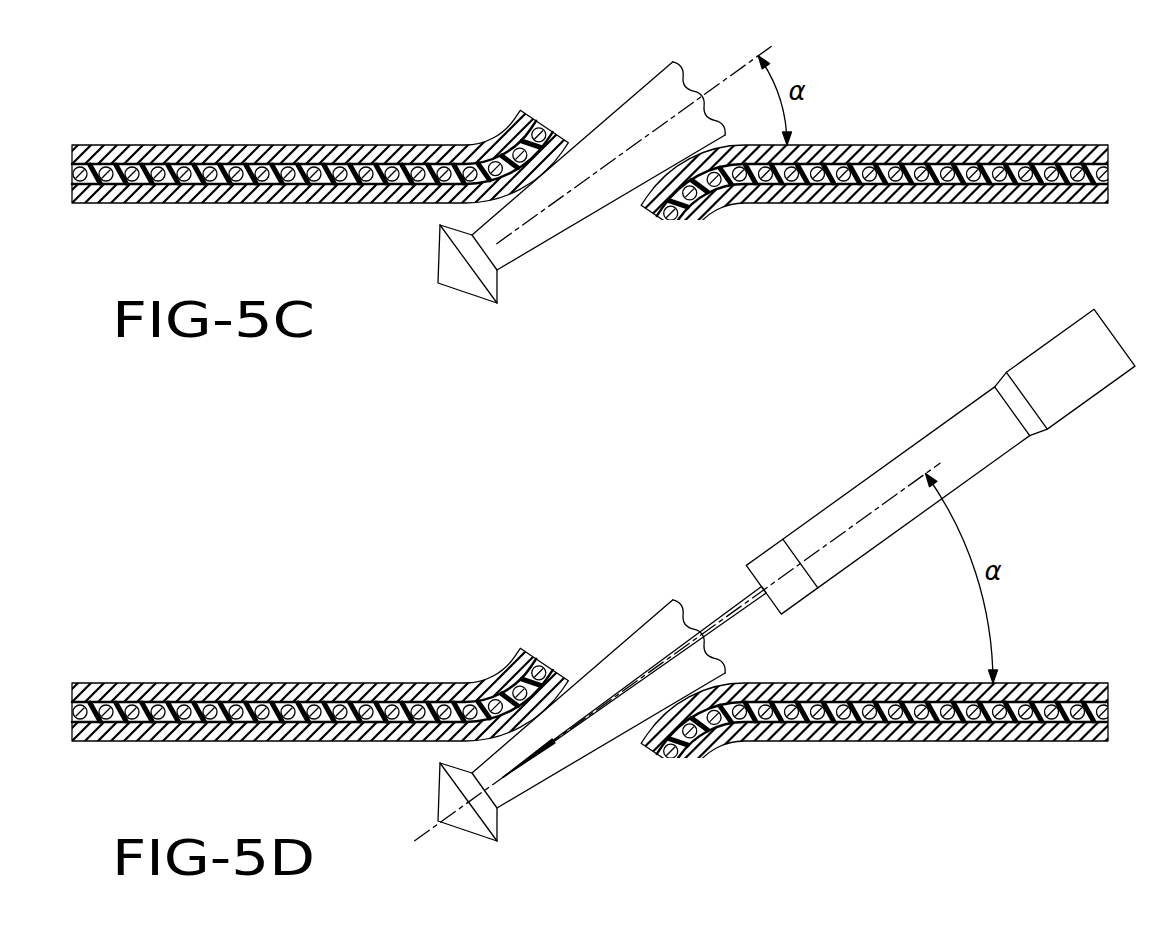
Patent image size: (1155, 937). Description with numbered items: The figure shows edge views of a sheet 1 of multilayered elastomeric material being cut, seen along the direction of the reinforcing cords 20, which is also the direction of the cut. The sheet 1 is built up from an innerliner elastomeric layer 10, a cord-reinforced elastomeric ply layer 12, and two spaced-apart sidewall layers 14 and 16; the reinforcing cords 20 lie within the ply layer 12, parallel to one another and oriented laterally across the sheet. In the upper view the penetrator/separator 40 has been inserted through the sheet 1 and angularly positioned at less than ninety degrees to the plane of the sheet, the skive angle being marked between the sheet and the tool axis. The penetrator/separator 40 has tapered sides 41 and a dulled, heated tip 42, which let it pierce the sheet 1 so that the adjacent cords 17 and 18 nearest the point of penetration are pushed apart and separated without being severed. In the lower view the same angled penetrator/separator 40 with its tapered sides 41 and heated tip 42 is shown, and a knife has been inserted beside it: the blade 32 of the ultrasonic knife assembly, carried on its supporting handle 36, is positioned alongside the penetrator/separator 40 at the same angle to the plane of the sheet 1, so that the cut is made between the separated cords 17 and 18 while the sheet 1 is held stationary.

In FIG. 5C, the sheet 1 is at (346, 141).
In FIG. 5D, the sheet 1 is at (346, 679).
In FIG. 5C, the innerliner elastomeric layer 10 is at (982, 196).
In FIG. 5D, the innerliner elastomeric layer 10 is at (837, 743).
In FIG. 5C, the cord-reinforced elastomeric ply layer 12 is at (248, 177).
In FIG. 5D, the cord-reinforced elastomeric ply layer 12 is at (346, 717).
In FIG. 5C, the sidewall layer 14 is at (346, 155).
In FIG. 5D, the sidewall layer 14 is at (346, 710).
In FIG. 5C, the sidewall layer 16 is at (180, 157).
In FIG. 5D, the sidewall layer 16 is at (346, 710).
In FIG. 5C, the adjacent cord 17 is at (544, 132).
In FIG. 5C, the adjacent cord 18 is at (682, 222).
In FIG. 5C, the reinforcing cords 20 is at (912, 170).
In FIG. 5D, the reinforcing cords 20 is at (837, 738).
In FIG. 5D, the blade 32 is at (634, 648).
In FIG. 5D, the supporting handle 36 is at (940, 461).
In FIG. 5C, the penetrator/separator 40 is at (533, 237).
In FIG. 5D, the penetrator/separator 40 is at (581, 700).
In FIG. 5D, the tapered sides 41 is at (598, 669).
In FIG. 5C, the heated tip 42 is at (438, 283).
In FIG. 5D, the heated tip 42 is at (467, 802).